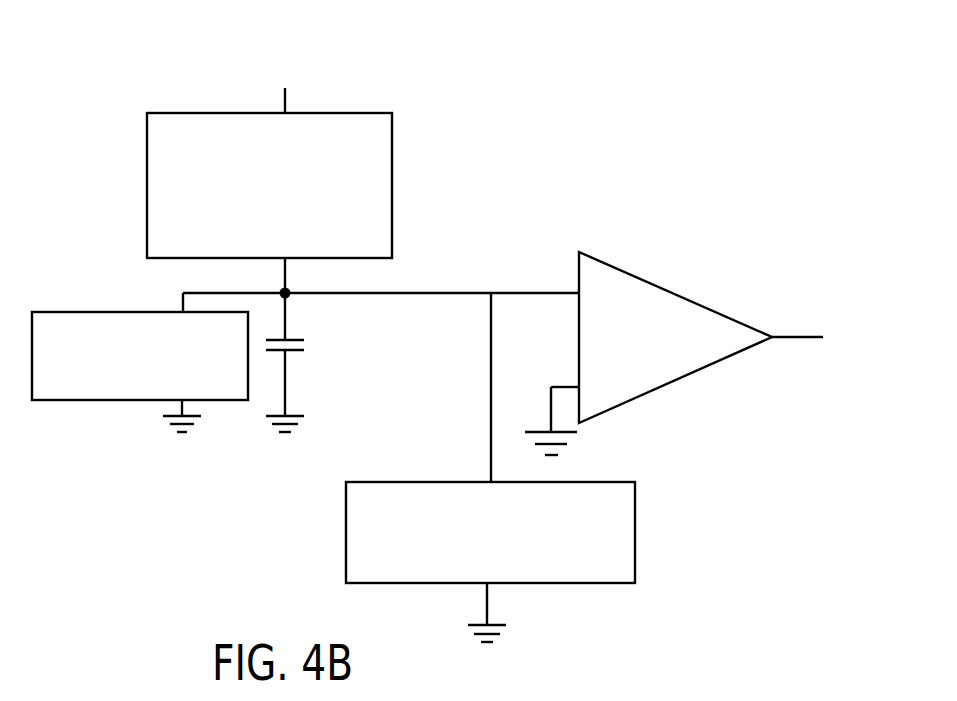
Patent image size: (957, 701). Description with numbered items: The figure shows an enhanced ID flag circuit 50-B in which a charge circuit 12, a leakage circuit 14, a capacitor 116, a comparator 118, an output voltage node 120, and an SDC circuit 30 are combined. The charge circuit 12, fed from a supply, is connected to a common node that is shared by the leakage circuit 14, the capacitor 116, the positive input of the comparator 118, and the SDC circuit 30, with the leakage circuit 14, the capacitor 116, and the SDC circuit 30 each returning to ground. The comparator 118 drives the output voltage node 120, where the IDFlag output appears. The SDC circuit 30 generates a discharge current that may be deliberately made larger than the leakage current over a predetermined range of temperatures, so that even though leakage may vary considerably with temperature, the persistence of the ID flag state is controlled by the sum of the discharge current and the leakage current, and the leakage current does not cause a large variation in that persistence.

The enhanced ID flag circuit 50-B is at (750, 92).
The charge circuit 12 is at (360, 236).
The leakage circuit 14 is at (236, 387).
The capacitor 116 is at (302, 367).
The comparator 118 is at (632, 270).
The output voltage node 120 is at (788, 326).
The SDC circuit 30 is at (640, 528).